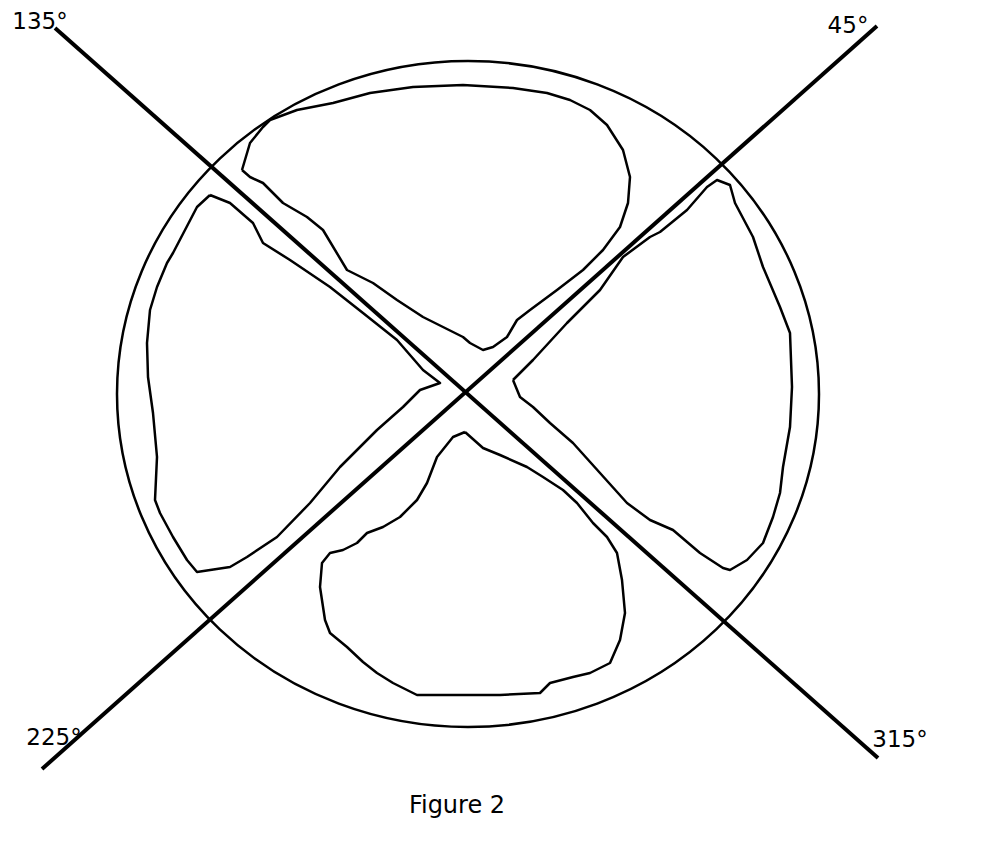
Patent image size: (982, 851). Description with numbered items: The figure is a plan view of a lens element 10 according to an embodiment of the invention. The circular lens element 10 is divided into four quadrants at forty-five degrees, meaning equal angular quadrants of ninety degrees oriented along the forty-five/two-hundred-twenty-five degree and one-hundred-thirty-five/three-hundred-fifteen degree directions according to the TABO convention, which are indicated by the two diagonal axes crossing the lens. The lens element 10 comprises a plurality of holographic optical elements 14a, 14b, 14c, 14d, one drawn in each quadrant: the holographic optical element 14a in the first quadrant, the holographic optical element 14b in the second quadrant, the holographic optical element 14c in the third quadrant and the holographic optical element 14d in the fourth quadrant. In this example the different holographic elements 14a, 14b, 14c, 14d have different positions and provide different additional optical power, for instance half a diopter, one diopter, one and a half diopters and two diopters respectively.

The lens element 10 is at (163, 208).
The holographic optical element 14a is at (733, 307).
The holographic optical element 14b is at (533, 125).
The holographic optical element 14c is at (172, 328).
The holographic optical element 14d is at (423, 657).